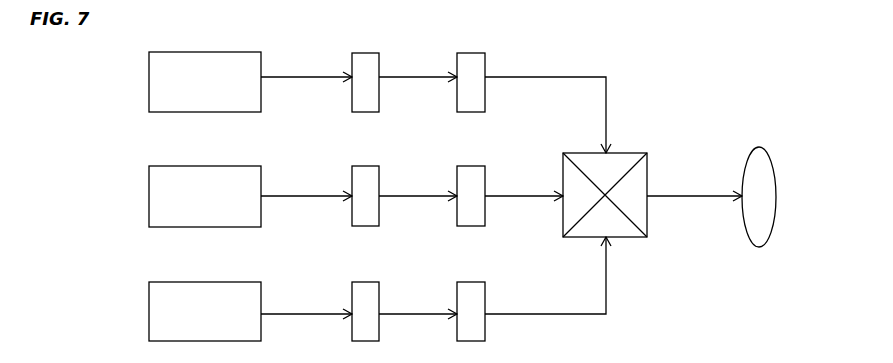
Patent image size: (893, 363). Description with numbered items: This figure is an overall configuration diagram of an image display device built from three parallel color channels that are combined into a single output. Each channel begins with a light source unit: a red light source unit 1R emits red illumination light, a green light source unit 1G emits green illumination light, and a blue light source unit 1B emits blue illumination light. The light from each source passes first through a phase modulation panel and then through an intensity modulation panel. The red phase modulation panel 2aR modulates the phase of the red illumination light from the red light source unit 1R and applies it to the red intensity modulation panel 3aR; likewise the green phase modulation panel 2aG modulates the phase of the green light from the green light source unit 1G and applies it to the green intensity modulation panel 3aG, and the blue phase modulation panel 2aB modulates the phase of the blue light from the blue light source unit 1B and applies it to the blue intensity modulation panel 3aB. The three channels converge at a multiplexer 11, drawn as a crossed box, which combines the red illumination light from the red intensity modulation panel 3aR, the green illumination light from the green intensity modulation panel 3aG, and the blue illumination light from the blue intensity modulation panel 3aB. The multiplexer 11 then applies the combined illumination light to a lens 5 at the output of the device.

The red light source unit 1R is at (149, 84).
The green light source unit 1G is at (149, 197).
The blue light source unit 1B is at (149, 320).
The red phase modulation panel 2aR is at (352, 54).
The green phase modulation panel 2aG is at (352, 167).
The blue phase modulation panel 2aB is at (352, 284).
The red intensity modulation panel 3aR is at (457, 54).
The green intensity modulation panel 3aG is at (457, 167).
The blue intensity modulation panel 3aB is at (457, 284).
The multiplexer 11 is at (563, 153).
The lens 5 is at (742, 148).